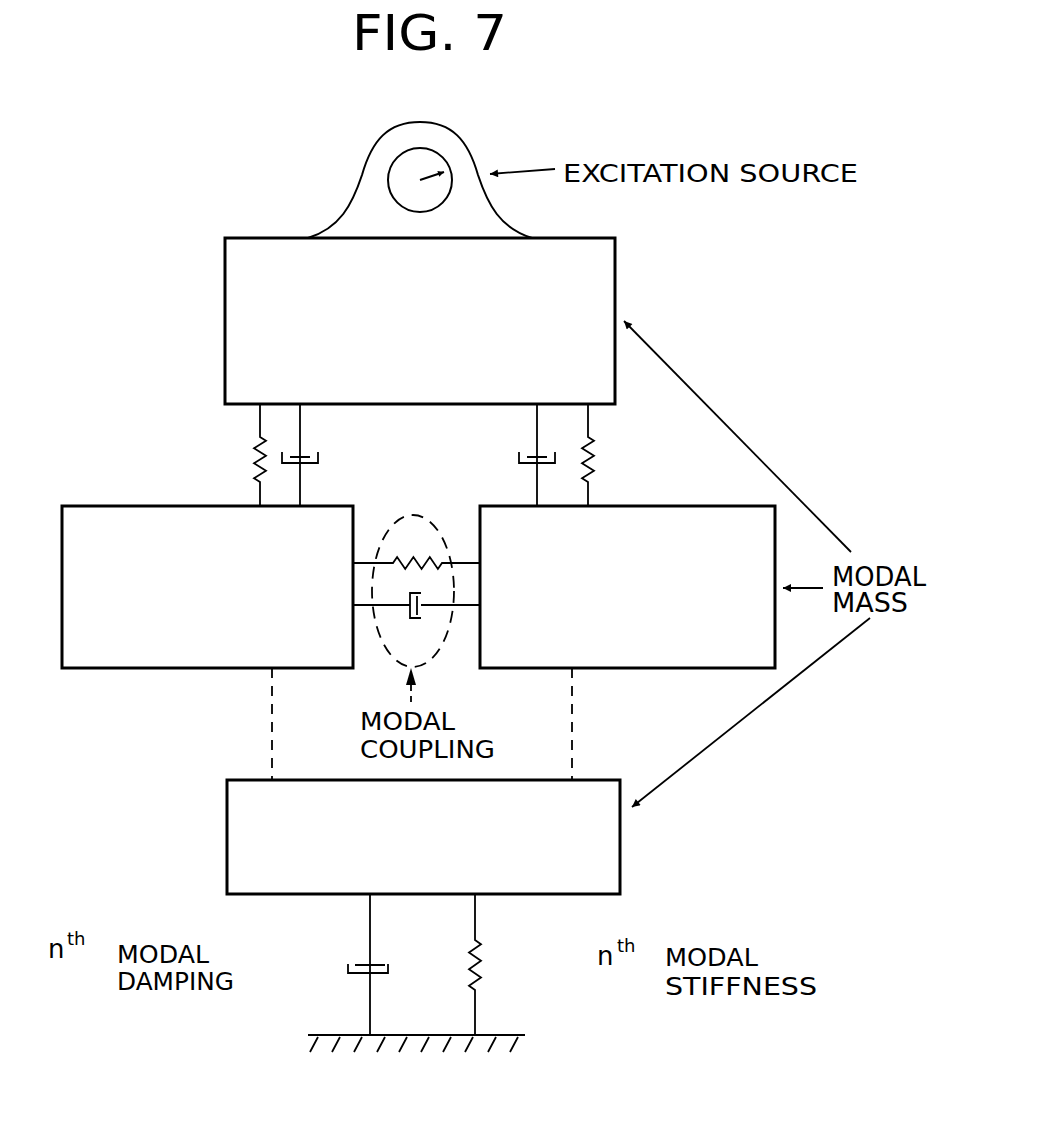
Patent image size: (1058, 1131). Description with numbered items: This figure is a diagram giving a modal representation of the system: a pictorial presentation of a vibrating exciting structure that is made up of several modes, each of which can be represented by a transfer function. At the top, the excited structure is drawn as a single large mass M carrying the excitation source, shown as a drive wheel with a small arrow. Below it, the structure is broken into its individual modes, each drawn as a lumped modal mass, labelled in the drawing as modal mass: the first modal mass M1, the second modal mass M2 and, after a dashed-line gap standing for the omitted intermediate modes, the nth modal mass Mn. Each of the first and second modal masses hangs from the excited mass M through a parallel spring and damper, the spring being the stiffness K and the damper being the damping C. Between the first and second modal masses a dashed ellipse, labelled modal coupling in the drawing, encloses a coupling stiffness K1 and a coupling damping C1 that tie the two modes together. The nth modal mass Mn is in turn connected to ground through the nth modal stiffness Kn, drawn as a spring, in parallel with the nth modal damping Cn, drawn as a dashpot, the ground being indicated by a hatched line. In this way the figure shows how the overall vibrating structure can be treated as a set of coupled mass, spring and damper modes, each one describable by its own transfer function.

The excited mass with excitation source M is at (420, 263).
The first modal mass M1 is at (641, 586).
The second modal mass M2 is at (207, 587).
The nth modal mass Mn is at (423, 837).
The modal stiffness spring K is at (421, 455).
The modal damping damper C is at (418, 455).
The modal coupling stiffness K1 is at (421, 557).
The modal coupling damping C1 is at (419, 657).
The nth modal stiffness Kn is at (587, 968).
The nth modal damping Cn is at (237, 967).